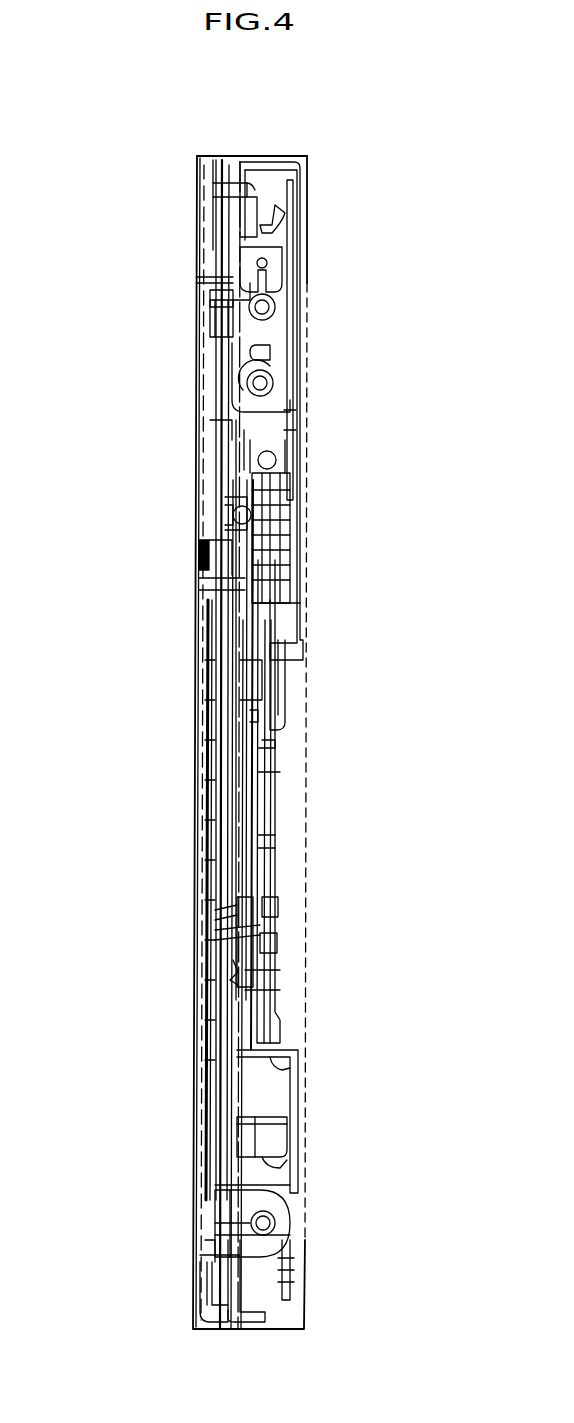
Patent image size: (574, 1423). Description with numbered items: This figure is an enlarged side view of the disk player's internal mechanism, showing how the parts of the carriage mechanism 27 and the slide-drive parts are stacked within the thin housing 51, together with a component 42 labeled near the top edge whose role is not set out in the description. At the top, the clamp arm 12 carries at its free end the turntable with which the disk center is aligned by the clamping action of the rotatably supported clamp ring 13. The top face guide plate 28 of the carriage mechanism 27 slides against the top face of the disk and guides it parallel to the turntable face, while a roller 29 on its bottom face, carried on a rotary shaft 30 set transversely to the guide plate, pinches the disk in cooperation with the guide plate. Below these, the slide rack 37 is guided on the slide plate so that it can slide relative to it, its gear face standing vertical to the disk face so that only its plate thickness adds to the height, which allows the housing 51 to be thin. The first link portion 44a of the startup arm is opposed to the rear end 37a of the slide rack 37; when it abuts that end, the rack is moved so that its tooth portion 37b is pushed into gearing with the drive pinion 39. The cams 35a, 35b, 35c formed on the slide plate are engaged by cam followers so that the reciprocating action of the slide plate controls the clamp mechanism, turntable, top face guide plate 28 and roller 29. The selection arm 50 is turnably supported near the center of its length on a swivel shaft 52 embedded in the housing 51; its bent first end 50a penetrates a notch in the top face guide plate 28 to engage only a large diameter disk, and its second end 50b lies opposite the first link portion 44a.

The clamp arm 12 is at (197, 1020).
The clamp ring 13 is at (210, 777).
The carriage mechanism 27 is at (309, 333).
The top face guide plate 28 is at (303, 390).
The roller 29 is at (247, 350).
The rotary shaft 30 is at (247, 380).
The cam 35a is at (242, 907).
The cam 35b is at (287, 493).
The cam 35c is at (278, 202).
The slide rack 37 is at (275, 843).
The end 37a is at (290, 1062).
The tooth portion 37b is at (233, 507).
The drive pinion 39 is at (233, 543).
The cover 42 is at (236, 146).
The first link portion 44a is at (263, 1157).
The selection arm 50 is at (200, 407).
The first end 50a is at (250, 283).
The second end 50b is at (223, 1163).
The housing 51 is at (200, 605).
The swivel shaft 52 is at (197, 660).